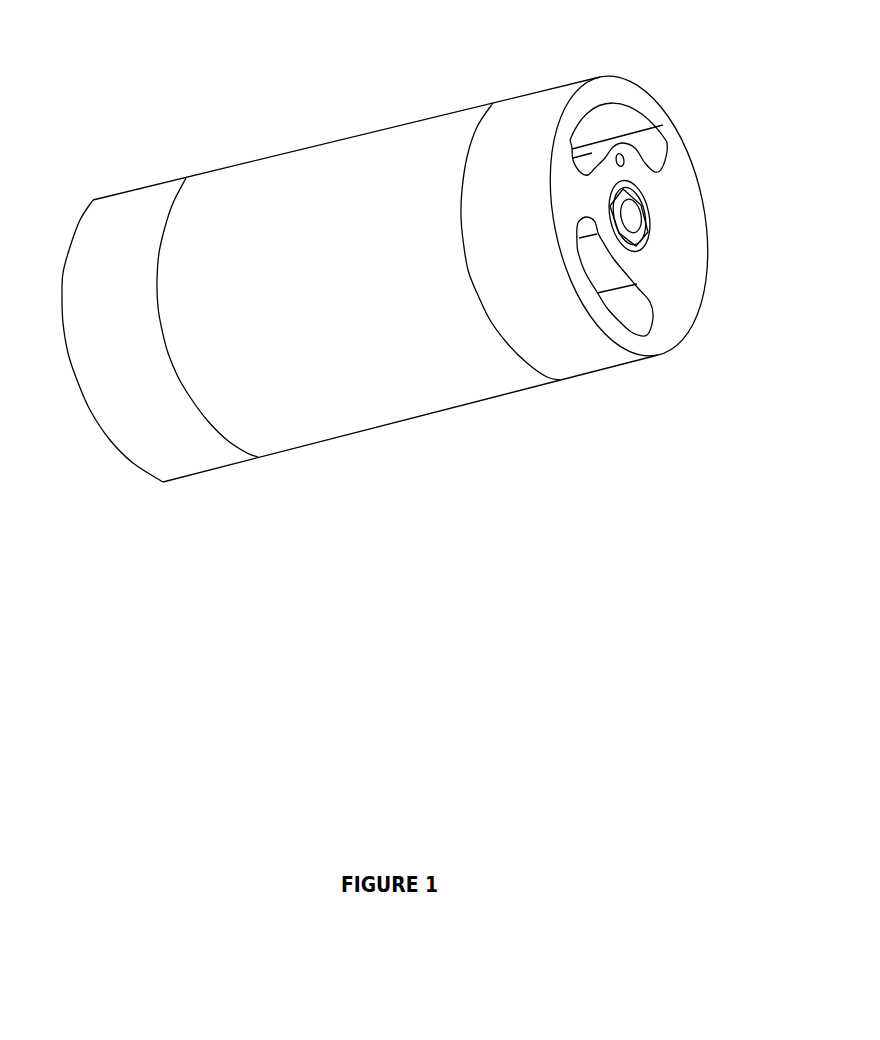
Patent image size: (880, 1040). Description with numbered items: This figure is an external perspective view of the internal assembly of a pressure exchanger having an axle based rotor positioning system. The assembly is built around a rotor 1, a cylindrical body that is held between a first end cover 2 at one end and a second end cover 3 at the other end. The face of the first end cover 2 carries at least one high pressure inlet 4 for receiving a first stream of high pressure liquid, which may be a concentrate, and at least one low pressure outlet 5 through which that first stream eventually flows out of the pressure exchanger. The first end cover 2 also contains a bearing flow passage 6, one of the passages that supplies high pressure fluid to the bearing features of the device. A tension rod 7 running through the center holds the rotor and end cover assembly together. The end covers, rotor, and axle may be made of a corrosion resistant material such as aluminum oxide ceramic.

The rotor 1 is at (240, 183).
The first end cover 2 is at (540, 100).
The second end cover 3 is at (115, 407).
The high pressure inlet 4 is at (612, 125).
The low pressure outlet 5 is at (612, 298).
The bearing flow passage 6 is at (625, 159).
The tension rod 7 is at (633, 215).